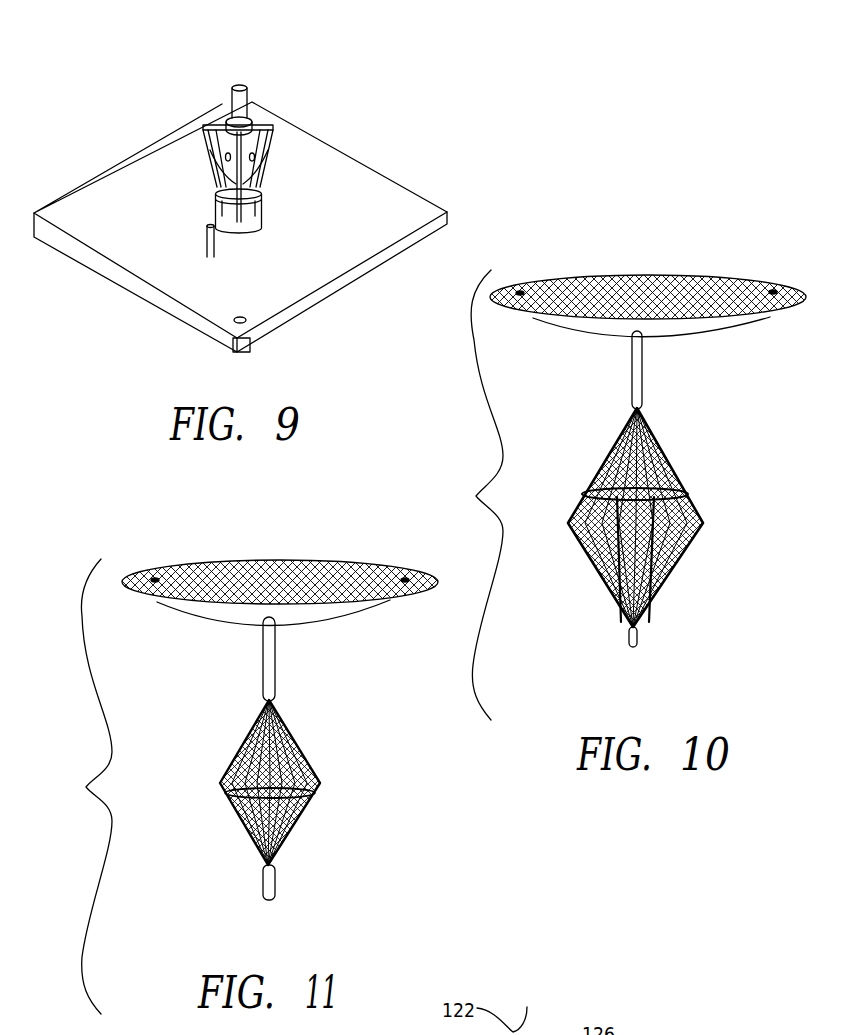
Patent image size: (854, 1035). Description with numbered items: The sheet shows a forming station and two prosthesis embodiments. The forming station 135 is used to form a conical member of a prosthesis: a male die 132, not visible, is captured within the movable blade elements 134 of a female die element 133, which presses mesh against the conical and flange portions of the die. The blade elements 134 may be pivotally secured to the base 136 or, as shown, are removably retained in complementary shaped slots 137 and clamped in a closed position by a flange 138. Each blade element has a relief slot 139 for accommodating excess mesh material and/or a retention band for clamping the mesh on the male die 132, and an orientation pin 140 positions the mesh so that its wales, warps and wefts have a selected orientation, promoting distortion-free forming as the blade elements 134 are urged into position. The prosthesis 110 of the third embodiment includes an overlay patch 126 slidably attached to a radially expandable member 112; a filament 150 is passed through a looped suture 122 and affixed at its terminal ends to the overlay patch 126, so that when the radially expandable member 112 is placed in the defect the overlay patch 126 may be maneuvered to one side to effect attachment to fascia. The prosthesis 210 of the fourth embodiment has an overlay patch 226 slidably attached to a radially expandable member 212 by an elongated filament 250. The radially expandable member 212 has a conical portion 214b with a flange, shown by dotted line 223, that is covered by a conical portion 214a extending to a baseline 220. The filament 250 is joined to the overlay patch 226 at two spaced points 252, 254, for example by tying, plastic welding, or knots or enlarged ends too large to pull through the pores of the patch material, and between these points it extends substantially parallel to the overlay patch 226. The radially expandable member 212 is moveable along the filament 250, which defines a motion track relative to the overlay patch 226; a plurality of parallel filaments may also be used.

In FIG. 9, the forming station 135 is at (127, 90).
In FIG. 9, the flange 138 is at (227, 118).
In FIG. 9, the male die 132 is at (240, 98).
In FIG. 9, the movable blade elements 134 is at (245, 117).
In FIG. 9, the female die element 133 is at (282, 174).
In FIG. 9, the complementary shaped slots 137 is at (262, 207).
In FIG. 9, the base 136 is at (253, 221).
In FIG. 9, the relief slot 139 is at (223, 147).
In FIG. 9, the orientation pin 140 is at (207, 240).
In FIG. 10, the prosthesis 110 is at (471, 495).
In FIG. 10, the overlay patch 126 is at (652, 292).
In FIG. 10, the filament 150 is at (693, 337).
In FIG. 10, the looped suture 122 is at (642, 377).
In FIG. 10, the radially expandable member 112 is at (705, 565).
In FIG. 11, the prosthesis 210 is at (70, 786).
In FIG. 11, the overlay patch 226 is at (273, 568).
In FIG. 11, the point of connection 252 is at (153, 577).
In FIG. 11, the point of connection 254 is at (392, 578).
In FIG. 11, the elongated filament 250 is at (322, 625).
In FIG. 11, the baseline 220 is at (322, 778).
In FIG. 11, the radially expandable member 212 is at (231, 833).
In FIG. 11, the conical portion 214a is at (290, 708).
In FIG. 11, the conical portion 214b is at (308, 832).
In FIG. 11, the flange 223 is at (293, 735).